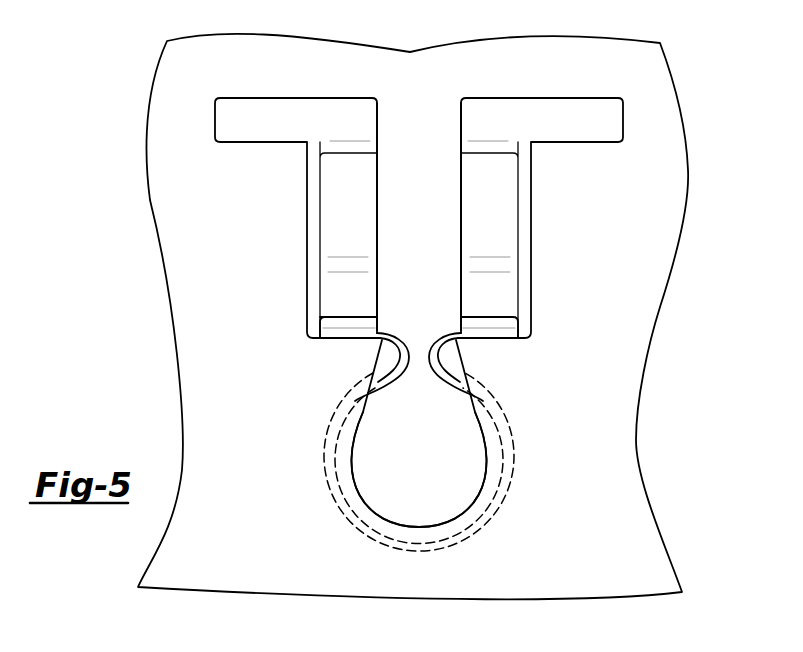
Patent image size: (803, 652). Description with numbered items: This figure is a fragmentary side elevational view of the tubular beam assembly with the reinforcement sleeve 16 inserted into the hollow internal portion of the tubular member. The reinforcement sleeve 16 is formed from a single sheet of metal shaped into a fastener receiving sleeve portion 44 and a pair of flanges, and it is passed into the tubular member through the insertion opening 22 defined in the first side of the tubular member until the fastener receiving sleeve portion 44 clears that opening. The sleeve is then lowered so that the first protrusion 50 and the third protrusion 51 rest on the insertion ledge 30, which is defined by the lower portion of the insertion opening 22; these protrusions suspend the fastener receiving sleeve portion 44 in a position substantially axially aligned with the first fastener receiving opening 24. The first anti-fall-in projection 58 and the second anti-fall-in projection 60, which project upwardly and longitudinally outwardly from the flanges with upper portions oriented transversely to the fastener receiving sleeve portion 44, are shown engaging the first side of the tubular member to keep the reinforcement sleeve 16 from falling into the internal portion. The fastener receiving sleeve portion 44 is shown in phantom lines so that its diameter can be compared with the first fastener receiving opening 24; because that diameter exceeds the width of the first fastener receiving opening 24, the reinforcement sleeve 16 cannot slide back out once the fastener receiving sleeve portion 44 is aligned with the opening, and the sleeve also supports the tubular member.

The panel body 16 is at (545, 500).
The slot 22 is at (415, 133).
The opening 24 is at (431, 469).
The retaining strip 30 is at (347, 341).
The tube 44 is at (322, 457).
The left tab 50 is at (330, 325).
The right tab 51 is at (500, 323).
The left flange 58 is at (227, 122).
The right flange 60 is at (600, 122).